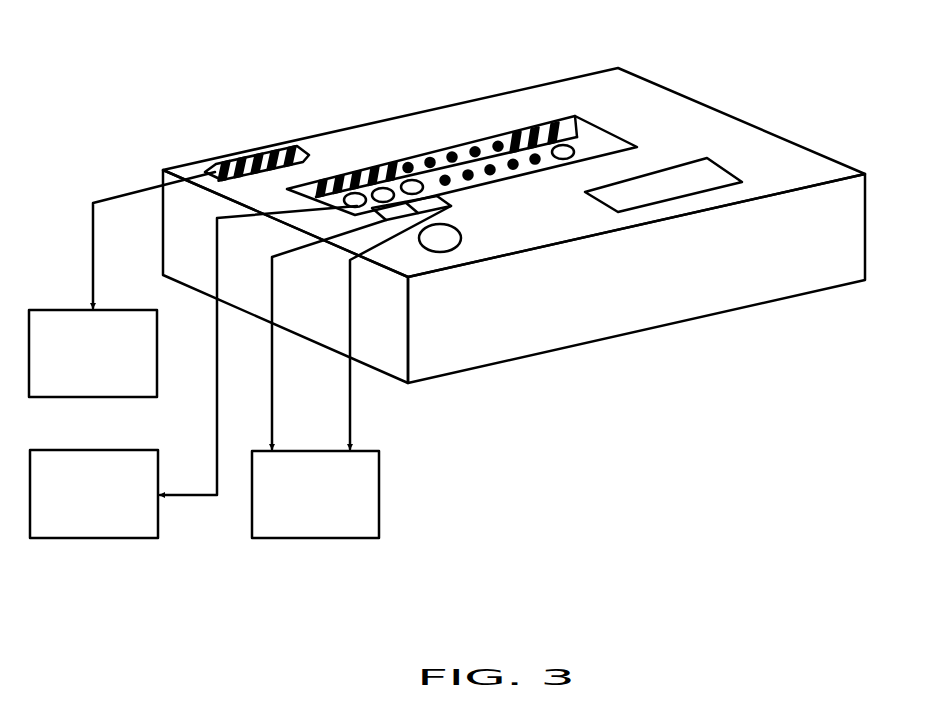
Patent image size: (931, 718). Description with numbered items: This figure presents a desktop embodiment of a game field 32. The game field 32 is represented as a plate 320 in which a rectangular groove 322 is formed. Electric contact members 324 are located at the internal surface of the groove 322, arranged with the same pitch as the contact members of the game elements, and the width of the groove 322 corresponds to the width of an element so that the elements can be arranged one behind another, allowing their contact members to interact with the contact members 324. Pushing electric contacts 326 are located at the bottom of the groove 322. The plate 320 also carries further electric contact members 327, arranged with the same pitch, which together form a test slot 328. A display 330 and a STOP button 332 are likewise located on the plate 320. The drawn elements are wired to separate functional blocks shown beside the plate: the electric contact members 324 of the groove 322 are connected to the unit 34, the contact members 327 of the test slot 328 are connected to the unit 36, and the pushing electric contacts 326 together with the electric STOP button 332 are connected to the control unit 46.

The game field 32 is at (518, 208).
The plate 320 is at (687, 287).
The rectangular groove 322 is at (598, 137).
The electric contact members 324 is at (548, 122).
The pushing electric contacts 326 is at (412, 185).
The electric contact members 327 is at (274, 149).
The test slot 328 is at (215, 171).
The display 330 is at (707, 177).
The STOP button 332 is at (440, 240).
The unit 34 is at (193, 372).
The unit 36 is at (122, 284).
The control unit 46 is at (351, 372).